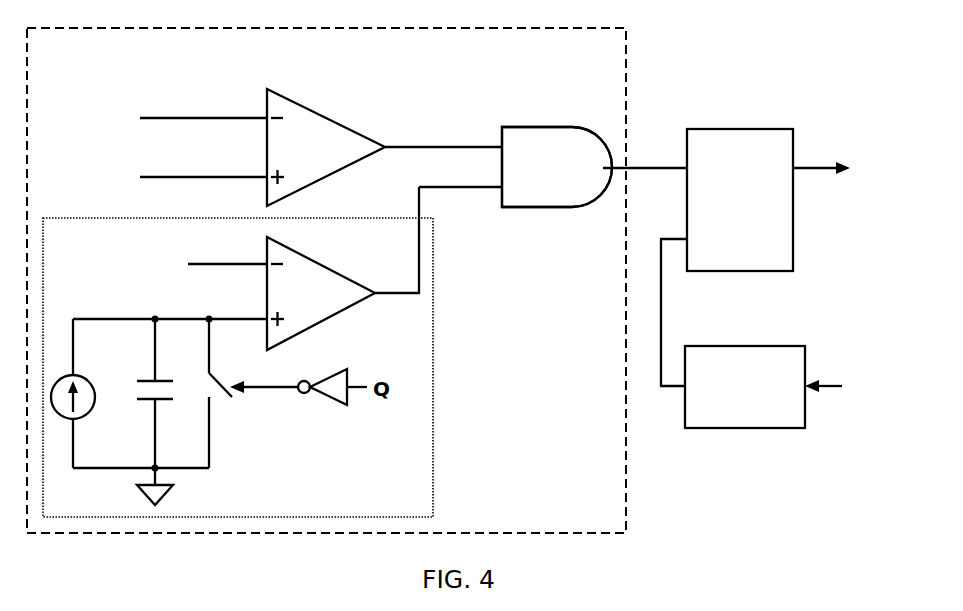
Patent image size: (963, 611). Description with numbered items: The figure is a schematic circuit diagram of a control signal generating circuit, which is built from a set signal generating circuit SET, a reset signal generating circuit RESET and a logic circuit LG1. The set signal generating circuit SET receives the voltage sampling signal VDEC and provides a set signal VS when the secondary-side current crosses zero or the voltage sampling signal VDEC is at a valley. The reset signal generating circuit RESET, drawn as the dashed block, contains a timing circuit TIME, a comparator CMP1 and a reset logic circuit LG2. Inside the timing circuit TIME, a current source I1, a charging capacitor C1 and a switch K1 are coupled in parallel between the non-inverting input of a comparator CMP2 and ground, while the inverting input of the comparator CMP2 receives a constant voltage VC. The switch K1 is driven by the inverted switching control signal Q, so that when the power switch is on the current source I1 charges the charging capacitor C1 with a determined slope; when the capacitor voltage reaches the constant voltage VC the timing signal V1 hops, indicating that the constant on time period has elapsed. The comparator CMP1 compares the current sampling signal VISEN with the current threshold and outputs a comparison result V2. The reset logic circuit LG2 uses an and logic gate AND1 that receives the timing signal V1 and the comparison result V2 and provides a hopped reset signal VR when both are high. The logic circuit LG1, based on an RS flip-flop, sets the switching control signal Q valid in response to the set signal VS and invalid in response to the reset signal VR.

The logic circuit LG1 is at (757, 129).
The reset logic circuit LG2 is at (545, 128).
The and logic gate AND1 is at (515, 167).
The comparator CMP1 is at (281, 293).
The comparator CMP2 is at (262, 147).
The current source I1 is at (85, 393).
The charging capacitor C1 is at (161, 393).
The switch K1 is at (253, 393).
The set signal generating circuit SET is at (745, 387).
The timing signal V1 is at (397, 240).
The comparison result V2 is at (443, 135).
The reset signal VR is at (645, 152).
The set signal VS is at (680, 312).
The constant voltage VC is at (129, 267).
The switching control signal Q is at (835, 171).
The voltage sampling signal VDEC is at (847, 392).
The current sampling signal VISEN is at (148, 159).
The timing circuit TIME is at (407, 500).
The reset signal generating circuit RESET is at (598, 513).